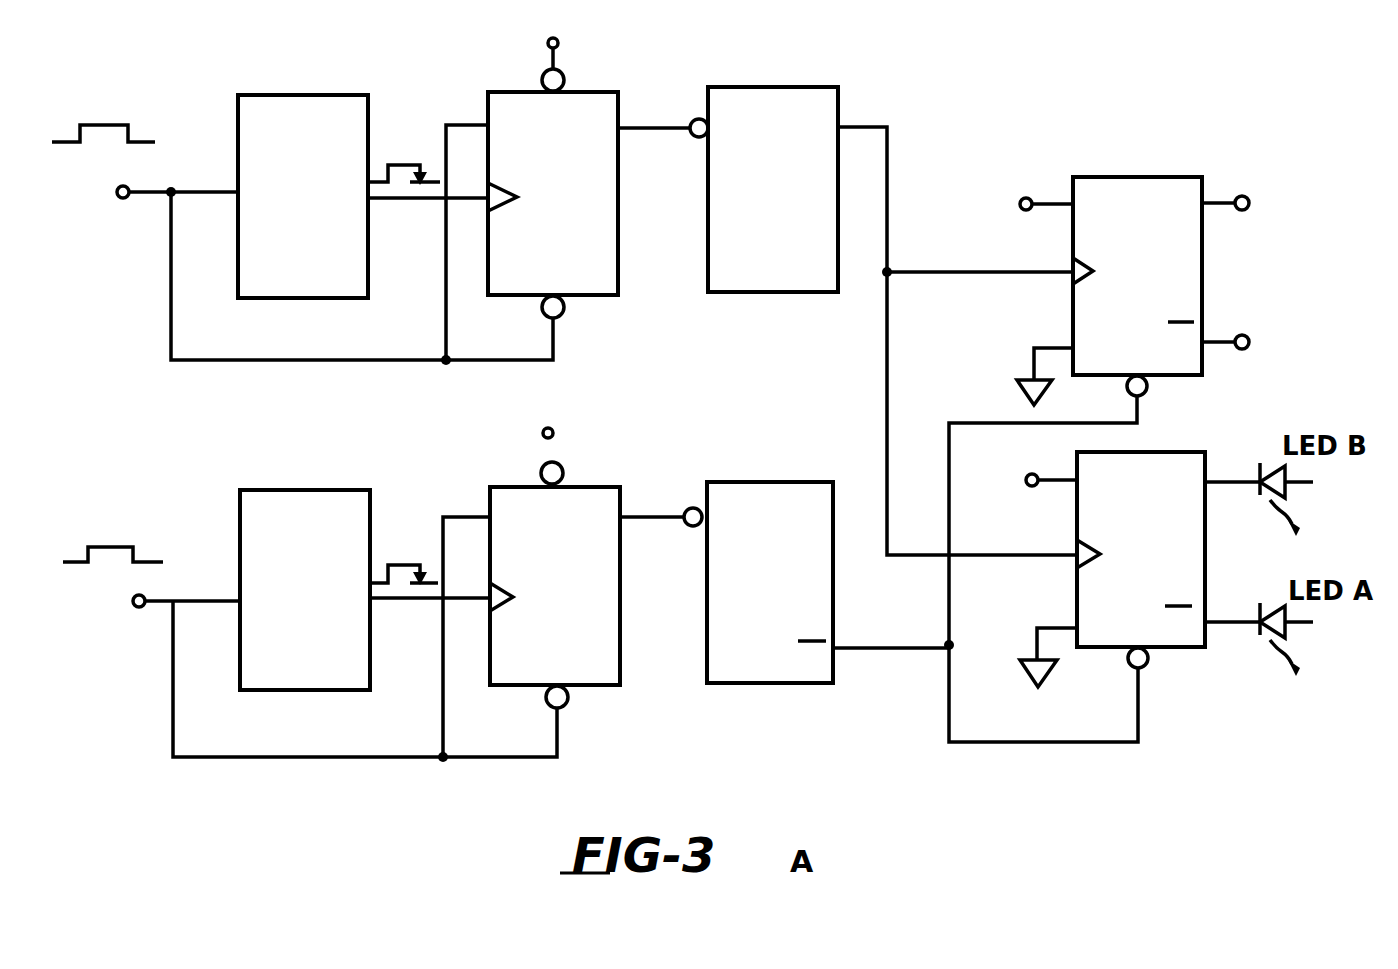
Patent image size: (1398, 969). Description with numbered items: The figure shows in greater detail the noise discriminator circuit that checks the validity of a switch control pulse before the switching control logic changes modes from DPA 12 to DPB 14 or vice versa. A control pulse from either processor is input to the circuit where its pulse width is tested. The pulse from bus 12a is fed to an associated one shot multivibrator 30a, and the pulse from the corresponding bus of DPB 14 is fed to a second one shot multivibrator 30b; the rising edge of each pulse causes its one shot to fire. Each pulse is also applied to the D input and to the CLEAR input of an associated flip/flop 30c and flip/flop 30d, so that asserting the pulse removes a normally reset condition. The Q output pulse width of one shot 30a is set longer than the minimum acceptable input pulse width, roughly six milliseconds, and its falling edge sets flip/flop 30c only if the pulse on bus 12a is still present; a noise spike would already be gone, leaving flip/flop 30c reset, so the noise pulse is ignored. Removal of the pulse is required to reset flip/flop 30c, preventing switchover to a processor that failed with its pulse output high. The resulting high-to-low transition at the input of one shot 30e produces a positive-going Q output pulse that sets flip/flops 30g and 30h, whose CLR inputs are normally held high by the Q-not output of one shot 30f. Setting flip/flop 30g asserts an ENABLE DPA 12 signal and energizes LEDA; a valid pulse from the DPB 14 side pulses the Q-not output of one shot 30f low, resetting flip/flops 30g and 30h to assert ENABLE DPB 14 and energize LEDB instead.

The one shot multivibrator 30a is at (308, 95).
The one shot multivibrator 30b is at (300, 490).
The flip/flop 30c is at (597, 295).
The flip/flop 30d is at (601, 685).
The one shot multivibrator 30e is at (778, 292).
The one shot multivibrator 30f is at (783, 683).
The flip/flop 30g is at (1127, 177).
The flip/flop 30h is at (1147, 452).
The bus 12a is at (140, 190).
The DPA 12 is at (1284, 214).
The DPB 14 is at (707, 487).